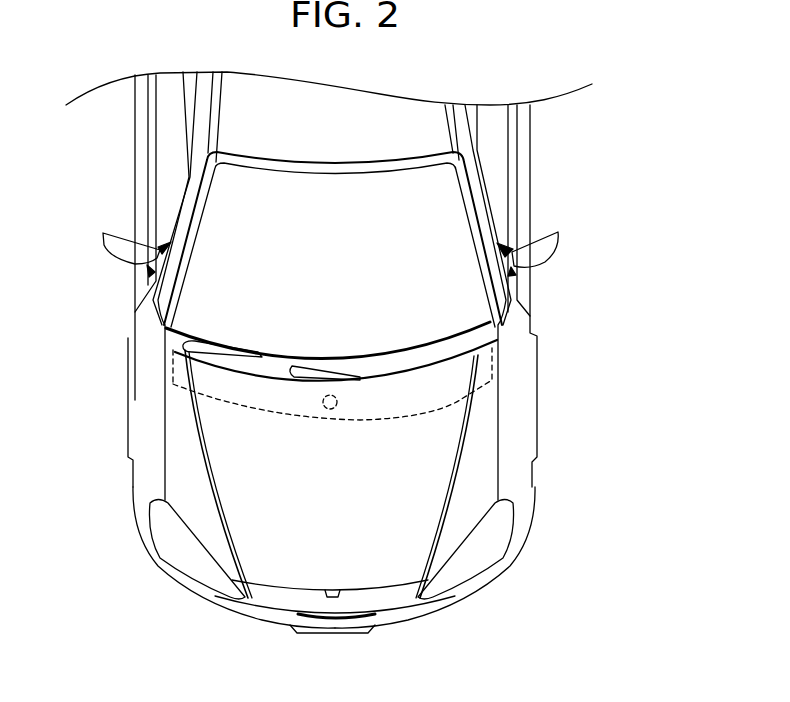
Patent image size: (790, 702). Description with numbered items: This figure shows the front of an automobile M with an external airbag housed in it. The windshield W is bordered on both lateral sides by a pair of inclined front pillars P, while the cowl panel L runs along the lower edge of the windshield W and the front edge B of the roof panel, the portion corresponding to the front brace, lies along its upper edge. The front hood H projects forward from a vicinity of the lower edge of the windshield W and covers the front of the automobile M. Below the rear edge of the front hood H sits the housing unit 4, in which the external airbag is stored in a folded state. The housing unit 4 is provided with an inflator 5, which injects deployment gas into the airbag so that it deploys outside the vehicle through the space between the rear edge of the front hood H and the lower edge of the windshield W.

The windshield W is at (228, 208).
The front edge of the roof panel B is at (410, 156).
The front pillars P is at (488, 237).
The cowl panel L is at (443, 357).
The housing unit 4 is at (175, 357).
The inflator 5 is at (338, 402).
The front hood H is at (477, 483).
The automobile M is at (503, 562).